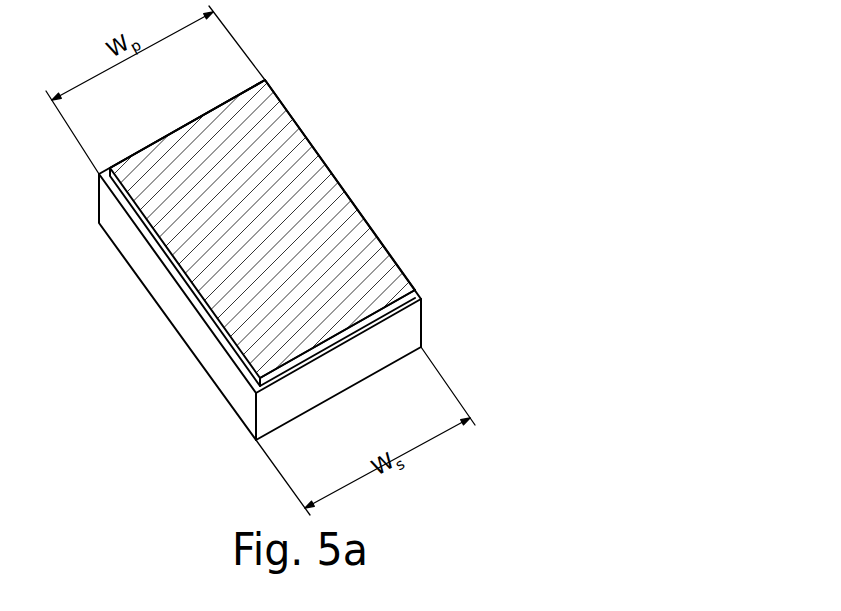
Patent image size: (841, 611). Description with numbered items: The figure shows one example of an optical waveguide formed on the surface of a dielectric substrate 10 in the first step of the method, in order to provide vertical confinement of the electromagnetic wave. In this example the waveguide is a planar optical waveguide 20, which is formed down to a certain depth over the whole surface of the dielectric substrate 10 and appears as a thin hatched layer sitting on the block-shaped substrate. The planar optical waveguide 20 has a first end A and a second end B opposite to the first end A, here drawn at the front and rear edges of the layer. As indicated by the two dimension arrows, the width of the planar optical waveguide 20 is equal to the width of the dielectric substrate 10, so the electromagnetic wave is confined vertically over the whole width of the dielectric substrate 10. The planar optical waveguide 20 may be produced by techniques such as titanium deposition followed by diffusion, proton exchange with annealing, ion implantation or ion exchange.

The dielectric substrate 10 is at (148, 289).
The planar optical waveguide 20 is at (417, 291).
The first end A is at (350, 340).
The second end B is at (158, 134).